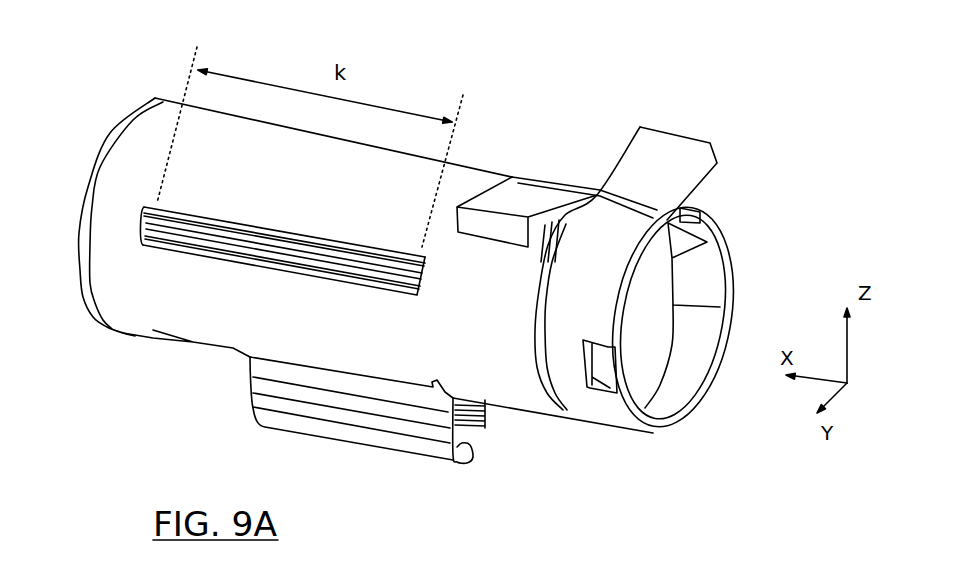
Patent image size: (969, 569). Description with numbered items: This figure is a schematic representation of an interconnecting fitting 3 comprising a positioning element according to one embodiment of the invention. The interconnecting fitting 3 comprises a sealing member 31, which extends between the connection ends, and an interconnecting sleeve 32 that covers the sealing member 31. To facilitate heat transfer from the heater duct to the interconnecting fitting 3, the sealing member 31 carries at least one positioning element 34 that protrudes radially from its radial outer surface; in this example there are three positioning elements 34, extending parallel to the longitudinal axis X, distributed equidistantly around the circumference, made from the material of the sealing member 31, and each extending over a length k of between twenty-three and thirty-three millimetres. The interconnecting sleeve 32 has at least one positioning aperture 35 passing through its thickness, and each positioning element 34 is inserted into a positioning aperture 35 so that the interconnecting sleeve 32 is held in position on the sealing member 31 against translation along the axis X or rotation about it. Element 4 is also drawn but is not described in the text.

The interconnecting fitting 3 is at (775, 206).
The sealing member 31 is at (85, 211).
The interconnecting sleeve 32 is at (147, 133).
The positioning element 34 is at (183, 232).
The positioning aperture 35 is at (263, 270).
The spring bracket 4 is at (413, 458).